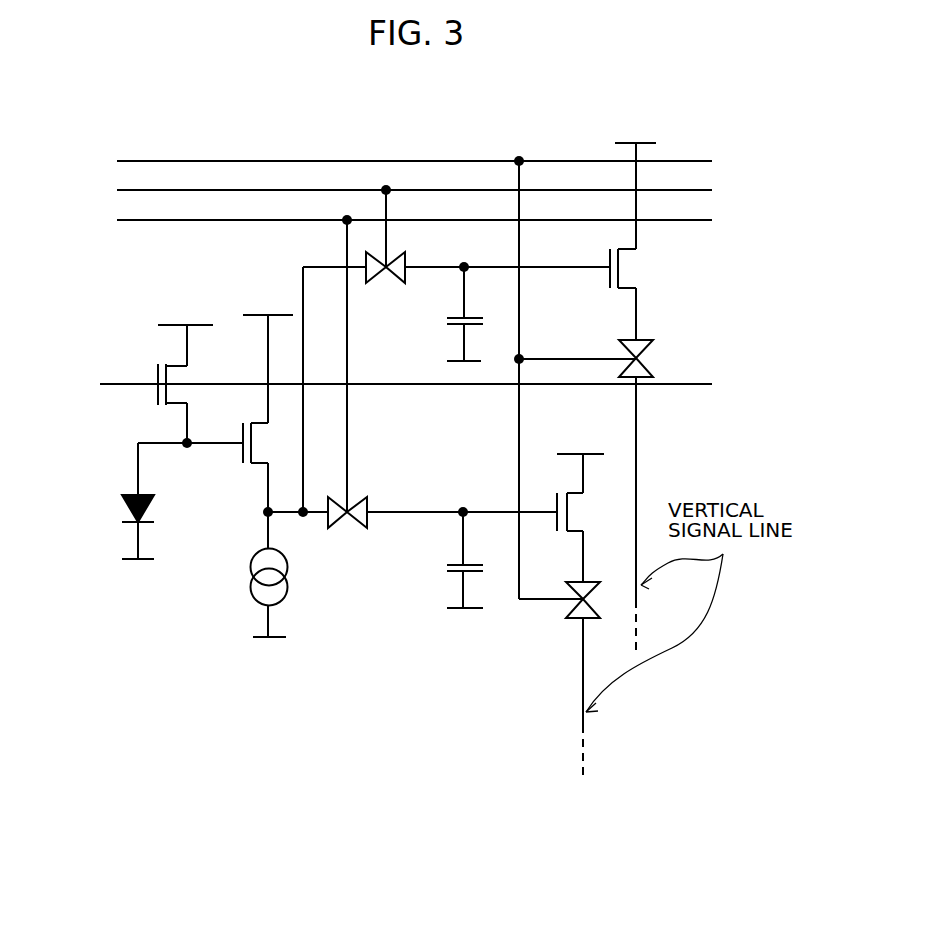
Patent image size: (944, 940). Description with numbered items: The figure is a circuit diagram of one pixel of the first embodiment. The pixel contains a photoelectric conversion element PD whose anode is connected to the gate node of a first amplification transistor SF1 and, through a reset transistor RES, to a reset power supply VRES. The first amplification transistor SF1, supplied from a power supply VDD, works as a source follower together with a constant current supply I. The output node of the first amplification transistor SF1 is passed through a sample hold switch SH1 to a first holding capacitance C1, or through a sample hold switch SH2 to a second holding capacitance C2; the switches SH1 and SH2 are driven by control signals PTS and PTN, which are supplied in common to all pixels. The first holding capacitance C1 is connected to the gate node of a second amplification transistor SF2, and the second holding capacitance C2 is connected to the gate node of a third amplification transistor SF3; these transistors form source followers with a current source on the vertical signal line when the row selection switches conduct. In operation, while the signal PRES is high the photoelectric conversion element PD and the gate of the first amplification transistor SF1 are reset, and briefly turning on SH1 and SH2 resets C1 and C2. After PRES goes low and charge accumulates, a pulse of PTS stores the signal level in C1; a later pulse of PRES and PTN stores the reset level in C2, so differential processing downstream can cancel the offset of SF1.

The control signal PTN is at (392, 223).
The control signal PTS is at (392, 360).
The signal PRES is at (377, 385).
The power supply voltage VDD is at (451, 306).
The reset power supply VRES is at (185, 333).
The reset transistor RES is at (177, 394).
The photoelectric conversion element PD is at (122, 501).
The first amplification transistor SF1 is at (245, 470).
The constant current supply I is at (278, 574).
The sample hold switch SH1 is at (412, 397).
The sample hold switch SH2 is at (456, 275).
The first holding capacitance C1 is at (449, 557).
The second holding capacitance C2 is at (450, 311).
The second amplification transistor SF2 is at (589, 537).
The third amplification transistor SF3 is at (644, 294).